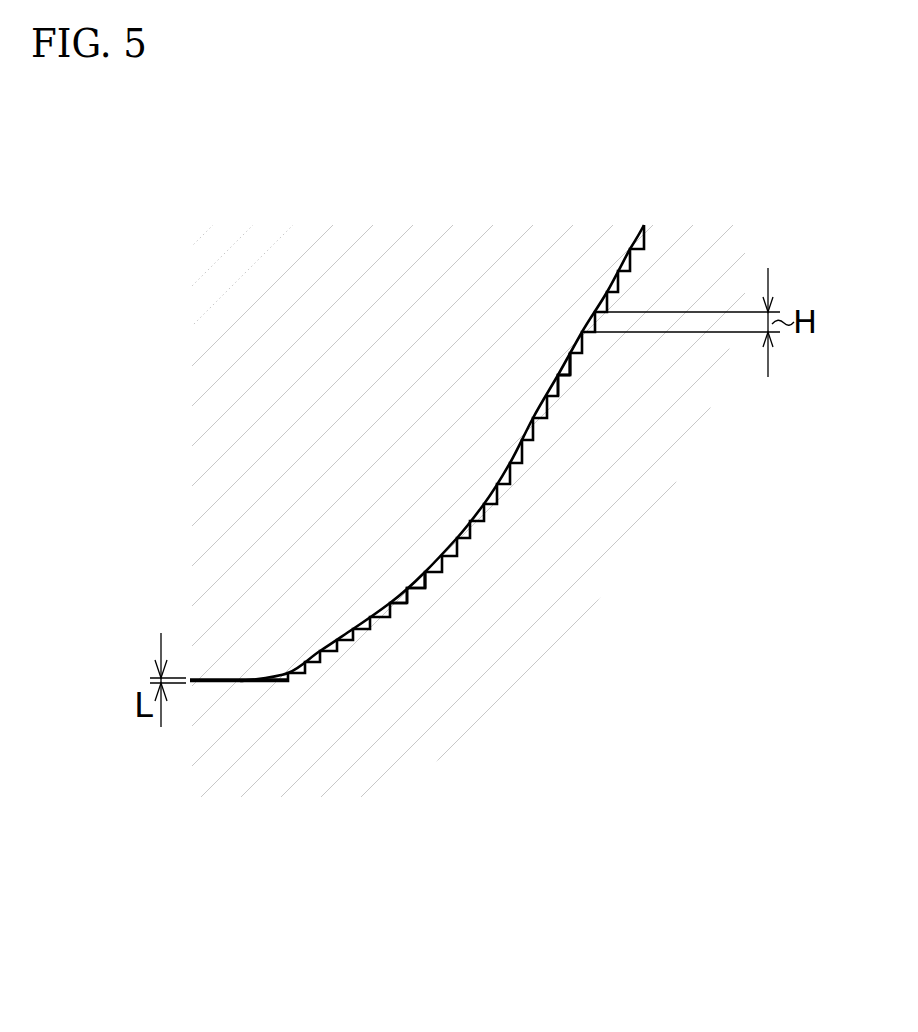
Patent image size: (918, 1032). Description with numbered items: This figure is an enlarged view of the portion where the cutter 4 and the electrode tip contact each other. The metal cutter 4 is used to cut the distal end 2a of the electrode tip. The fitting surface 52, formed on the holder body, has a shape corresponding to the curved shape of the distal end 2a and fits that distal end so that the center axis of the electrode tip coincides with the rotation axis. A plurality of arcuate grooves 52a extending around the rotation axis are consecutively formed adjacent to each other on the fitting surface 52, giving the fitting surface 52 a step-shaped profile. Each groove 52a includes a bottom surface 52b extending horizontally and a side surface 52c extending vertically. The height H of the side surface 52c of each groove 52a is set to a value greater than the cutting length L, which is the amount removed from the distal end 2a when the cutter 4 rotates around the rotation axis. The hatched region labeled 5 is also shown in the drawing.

The distal end 2a is at (486, 504).
The cutter 4 is at (573, 600).
The lens body 5 is at (620, 490).
The fitting surface 52 is at (227, 664).
The arcuate groove 52a is at (455, 834).
The bottom surface 52b is at (563, 360).
The side surface 52c is at (568, 362).